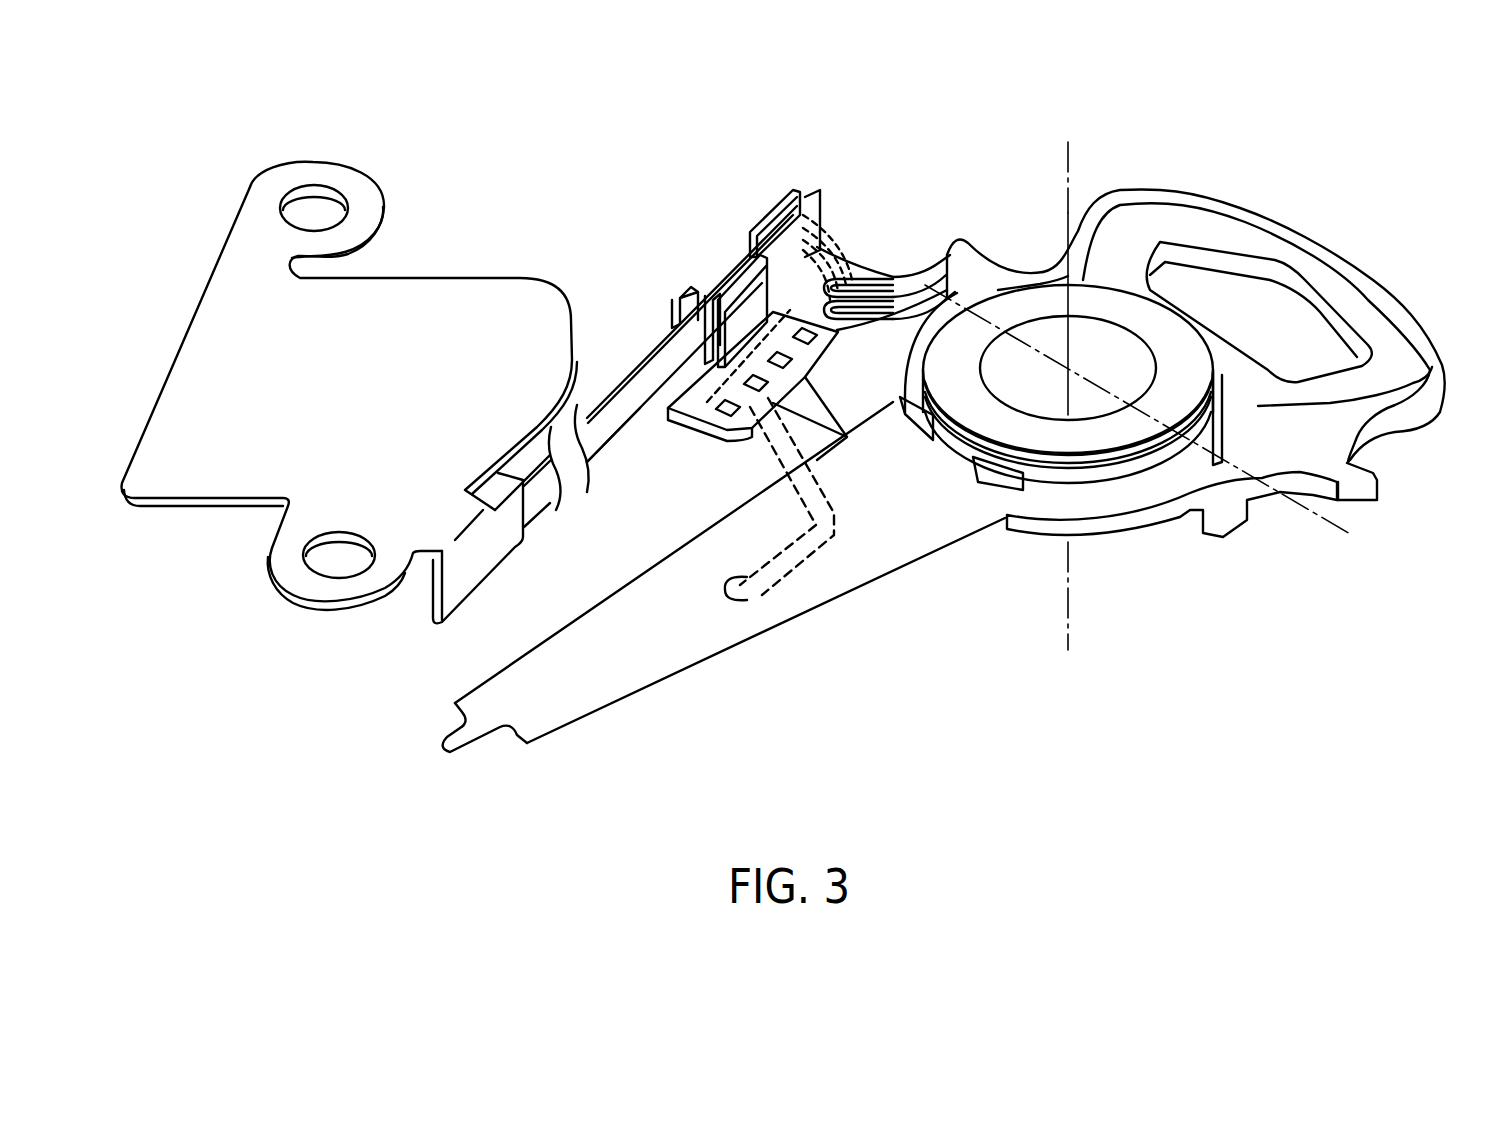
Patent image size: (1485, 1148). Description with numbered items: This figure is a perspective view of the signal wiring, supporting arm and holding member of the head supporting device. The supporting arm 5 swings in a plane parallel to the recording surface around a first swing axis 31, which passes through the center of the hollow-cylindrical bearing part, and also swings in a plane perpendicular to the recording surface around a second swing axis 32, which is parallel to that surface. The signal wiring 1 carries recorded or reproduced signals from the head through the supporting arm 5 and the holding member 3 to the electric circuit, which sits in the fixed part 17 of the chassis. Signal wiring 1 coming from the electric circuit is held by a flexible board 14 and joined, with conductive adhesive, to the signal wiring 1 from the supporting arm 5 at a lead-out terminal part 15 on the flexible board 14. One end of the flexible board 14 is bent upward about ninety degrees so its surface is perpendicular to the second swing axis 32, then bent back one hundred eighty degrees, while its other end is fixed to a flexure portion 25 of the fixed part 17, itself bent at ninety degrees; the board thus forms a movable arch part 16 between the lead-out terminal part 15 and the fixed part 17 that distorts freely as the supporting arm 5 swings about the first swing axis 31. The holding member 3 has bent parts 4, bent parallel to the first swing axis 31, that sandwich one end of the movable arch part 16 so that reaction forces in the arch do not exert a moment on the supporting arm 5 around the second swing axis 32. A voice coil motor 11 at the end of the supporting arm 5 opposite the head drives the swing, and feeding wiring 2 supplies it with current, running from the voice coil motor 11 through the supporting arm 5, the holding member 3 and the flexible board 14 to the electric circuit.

The signal wiring 1 is at (786, 588).
The feeding wiring 2 is at (912, 263).
The holding member 3 is at (728, 440).
The bent parts 4 is at (672, 297).
The supporting arm 5 is at (908, 567).
The voice coil motor 11 is at (1298, 257).
The flexible board 14 is at (624, 344).
The lead-out terminal part 15 is at (703, 417).
The movable arch part 16 is at (595, 473).
The fixed part 17 is at (475, 278).
The flexure portion 25 is at (492, 565).
The first swing axis 31 is at (1072, 165).
The second swing axis 32 is at (1313, 520).